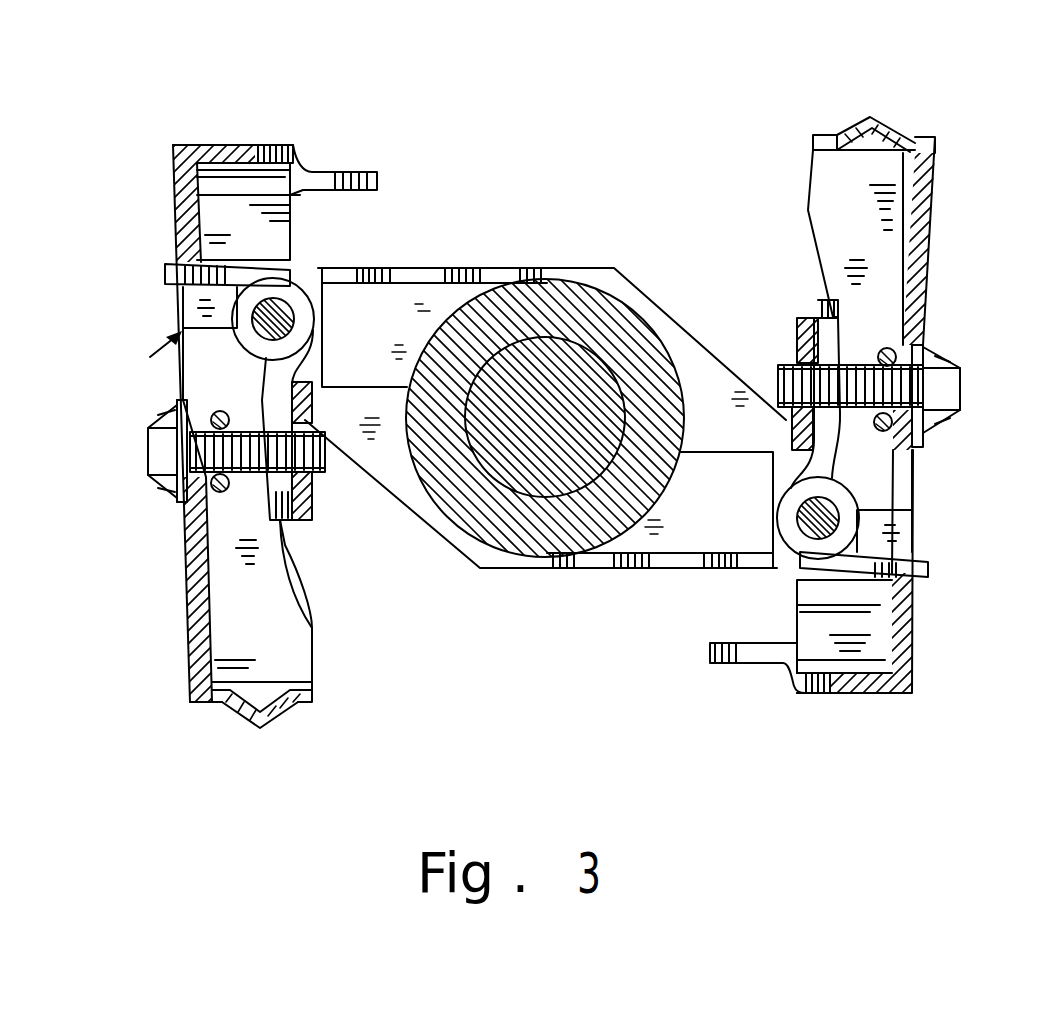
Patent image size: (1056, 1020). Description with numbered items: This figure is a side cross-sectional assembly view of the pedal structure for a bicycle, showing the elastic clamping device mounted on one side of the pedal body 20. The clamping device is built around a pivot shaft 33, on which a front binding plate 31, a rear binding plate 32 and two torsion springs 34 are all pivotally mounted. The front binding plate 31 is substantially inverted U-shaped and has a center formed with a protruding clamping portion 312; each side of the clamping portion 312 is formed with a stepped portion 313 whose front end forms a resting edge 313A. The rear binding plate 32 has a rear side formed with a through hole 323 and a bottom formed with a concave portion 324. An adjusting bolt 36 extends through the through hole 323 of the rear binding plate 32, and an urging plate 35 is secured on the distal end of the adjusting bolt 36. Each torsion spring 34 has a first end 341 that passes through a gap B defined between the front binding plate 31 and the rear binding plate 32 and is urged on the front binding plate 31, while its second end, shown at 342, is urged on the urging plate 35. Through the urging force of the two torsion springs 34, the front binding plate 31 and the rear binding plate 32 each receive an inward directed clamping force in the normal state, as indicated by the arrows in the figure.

The pedal body 20 is at (713, 368).
The front binding plate 31 is at (175, 144).
The clamping portion 312 is at (246, 93).
The stepped portion 313 is at (283, 145).
The resting edge 313A is at (328, 172).
The rear binding plate 32 is at (218, 706).
The through hole 323 is at (172, 500).
The concave portion 324 is at (260, 728).
The pivot shaft 33 is at (282, 287).
The torsion spring 34 is at (298, 395).
The first end 341 is at (165, 272).
The curved edge 342 is at (283, 523).
The urging plate 35 is at (310, 498).
The adjusting bolt 36 is at (148, 442).
The gap B is at (155, 365).